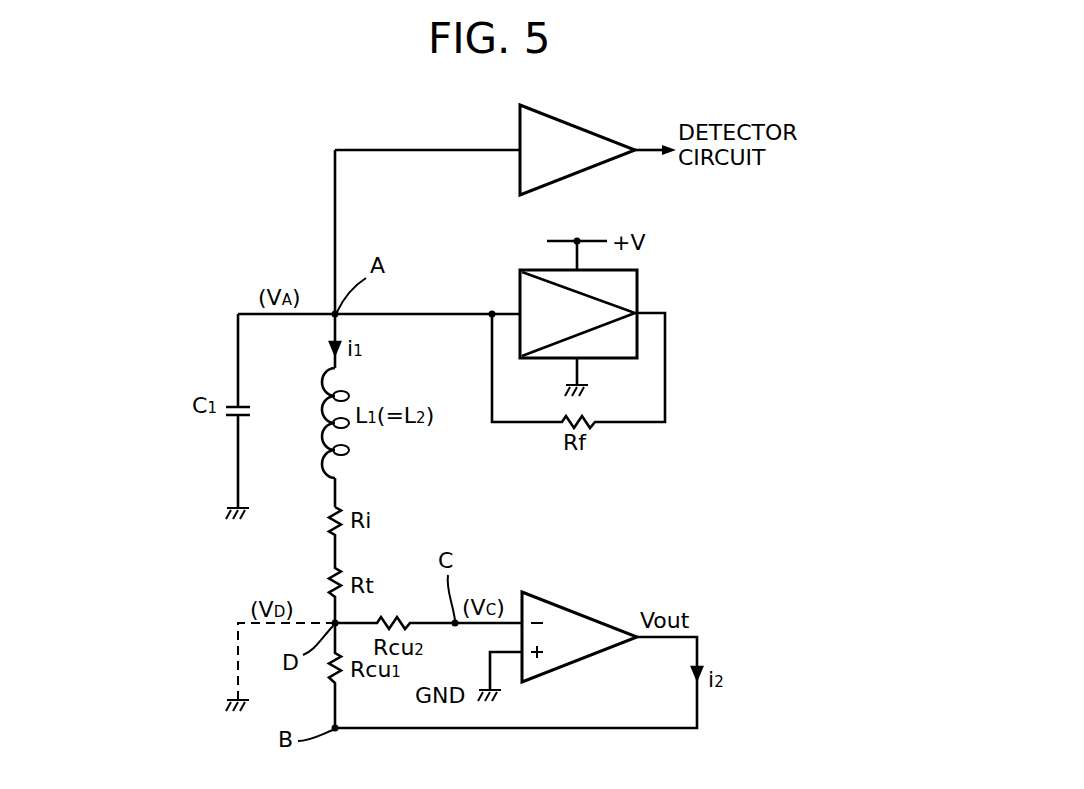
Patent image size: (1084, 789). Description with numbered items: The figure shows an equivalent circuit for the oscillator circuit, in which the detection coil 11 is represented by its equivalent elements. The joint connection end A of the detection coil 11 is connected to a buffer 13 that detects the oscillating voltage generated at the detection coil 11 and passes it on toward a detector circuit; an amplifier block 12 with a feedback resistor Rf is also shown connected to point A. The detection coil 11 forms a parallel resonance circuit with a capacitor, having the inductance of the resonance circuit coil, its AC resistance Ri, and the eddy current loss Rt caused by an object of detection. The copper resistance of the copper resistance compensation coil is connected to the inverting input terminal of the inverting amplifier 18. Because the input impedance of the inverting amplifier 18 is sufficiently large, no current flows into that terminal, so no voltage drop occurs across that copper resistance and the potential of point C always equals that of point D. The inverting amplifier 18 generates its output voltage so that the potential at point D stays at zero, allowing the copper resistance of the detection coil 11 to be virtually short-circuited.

The detection coil 11 is at (395, 451).
The amplifier 12 is at (637, 283).
The buffer 13 is at (520, 128).
The inverting amplifier 18 is at (583, 610).